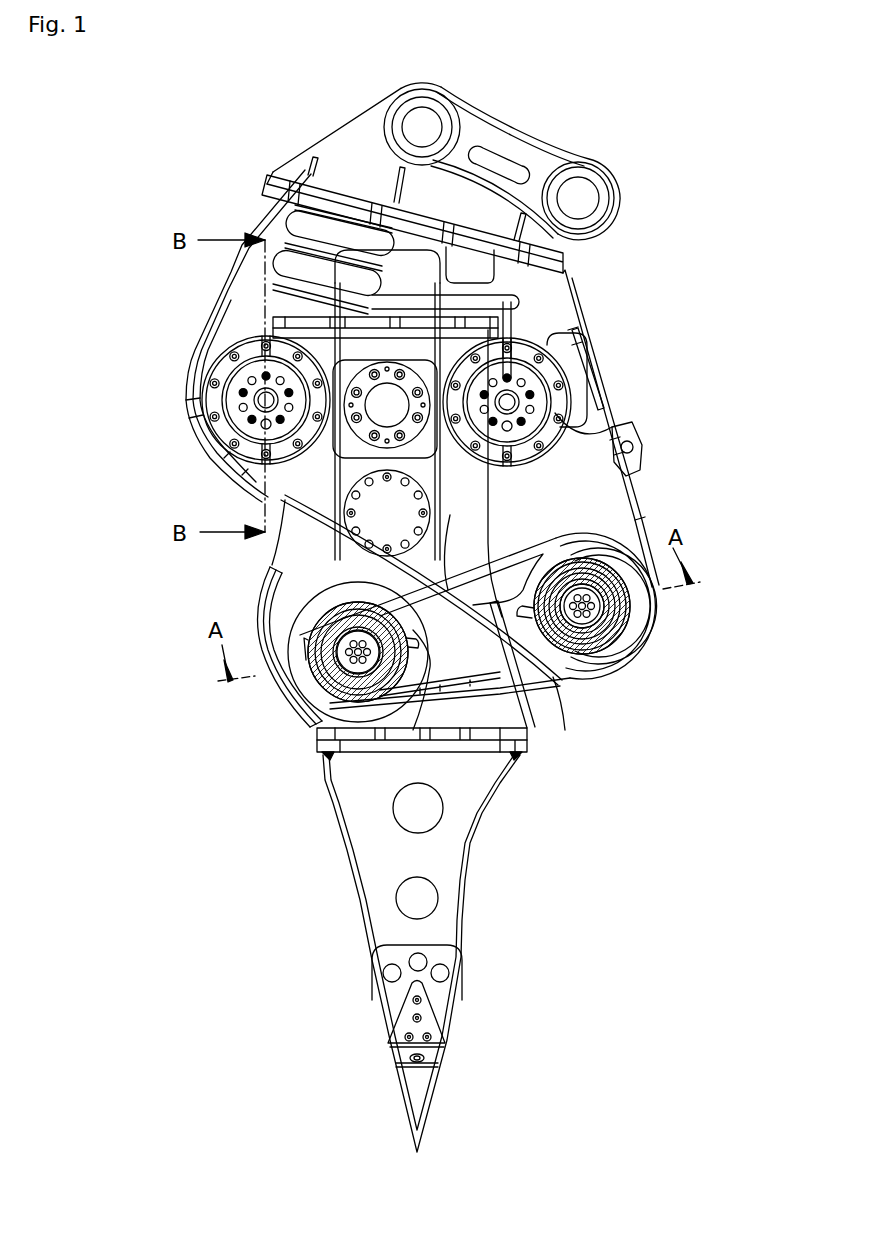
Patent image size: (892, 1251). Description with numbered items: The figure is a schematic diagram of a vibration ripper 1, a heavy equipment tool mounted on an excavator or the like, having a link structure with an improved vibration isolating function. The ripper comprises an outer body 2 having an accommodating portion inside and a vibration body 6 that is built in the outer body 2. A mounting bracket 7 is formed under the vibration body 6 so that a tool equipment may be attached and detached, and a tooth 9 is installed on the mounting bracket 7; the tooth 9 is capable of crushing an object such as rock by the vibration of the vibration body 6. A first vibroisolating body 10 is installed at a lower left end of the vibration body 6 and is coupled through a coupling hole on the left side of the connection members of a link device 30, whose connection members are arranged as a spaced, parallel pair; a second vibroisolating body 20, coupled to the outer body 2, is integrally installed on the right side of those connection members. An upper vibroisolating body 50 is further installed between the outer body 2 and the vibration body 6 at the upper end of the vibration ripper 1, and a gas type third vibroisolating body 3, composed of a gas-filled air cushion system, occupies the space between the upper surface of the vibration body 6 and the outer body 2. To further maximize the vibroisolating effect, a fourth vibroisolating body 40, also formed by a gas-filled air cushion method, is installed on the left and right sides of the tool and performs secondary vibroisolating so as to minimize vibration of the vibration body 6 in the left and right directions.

The vibration ripper 1 is at (630, 150).
The outer body 2 is at (605, 420).
The third vibroisolating body 3 is at (293, 230).
The vibration body 6 is at (287, 593).
The mounting bracket 7 is at (352, 740).
The tooth 9 is at (453, 850).
The first vibroisolating body 10 is at (335, 680).
The second vibroisolating body 20 is at (623, 630).
The link device 30 is at (556, 688).
The fourth vibroisolating body 40 is at (553, 343).
The upper vibroisolating body 50 is at (223, 370).